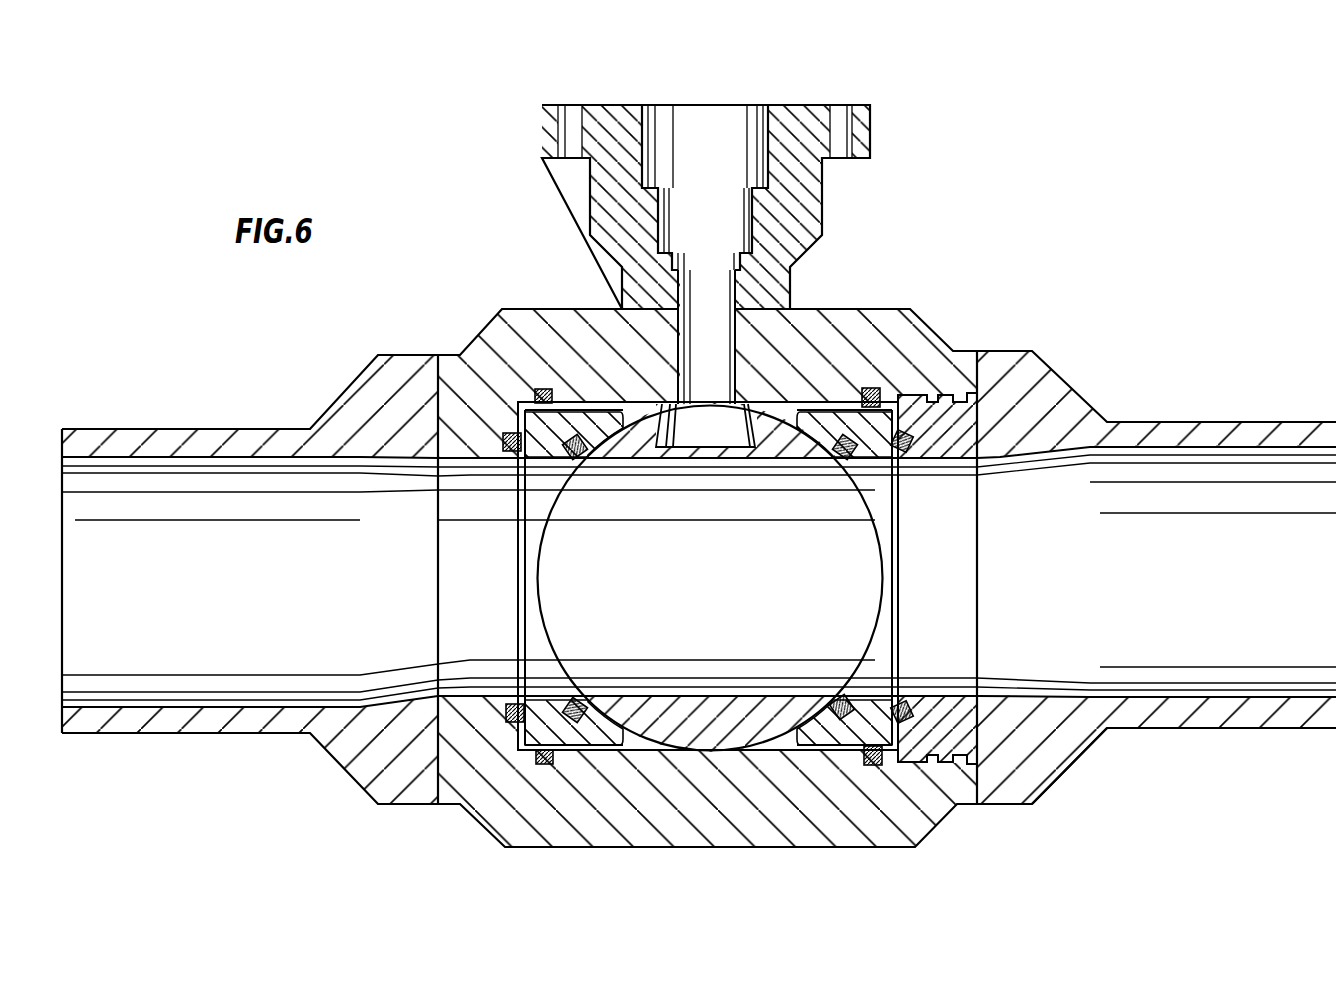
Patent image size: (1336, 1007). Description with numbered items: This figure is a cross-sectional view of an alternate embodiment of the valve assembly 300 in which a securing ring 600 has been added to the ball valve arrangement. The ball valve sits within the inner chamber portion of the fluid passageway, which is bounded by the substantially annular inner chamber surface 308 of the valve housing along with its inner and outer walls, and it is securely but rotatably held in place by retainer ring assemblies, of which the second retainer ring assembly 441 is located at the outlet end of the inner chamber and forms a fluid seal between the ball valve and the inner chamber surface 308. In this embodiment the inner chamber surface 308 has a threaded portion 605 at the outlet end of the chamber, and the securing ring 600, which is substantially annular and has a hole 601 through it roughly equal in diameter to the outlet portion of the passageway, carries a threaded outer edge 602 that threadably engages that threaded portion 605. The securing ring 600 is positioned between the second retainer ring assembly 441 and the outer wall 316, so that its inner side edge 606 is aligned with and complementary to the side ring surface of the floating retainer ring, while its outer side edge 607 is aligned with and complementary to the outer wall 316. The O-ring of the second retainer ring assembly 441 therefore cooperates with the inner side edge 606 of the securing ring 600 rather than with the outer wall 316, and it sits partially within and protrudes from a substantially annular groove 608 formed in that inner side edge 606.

The valve assembly 300 is at (952, 270).
The inner chamber surface 308 is at (607, 752).
The outer wall 316 is at (980, 737).
The second retainer ring assembly 441 is at (844, 747).
The securing ring 600 is at (972, 413).
The hole 601 is at (978, 628).
The threaded outer edge 602 is at (940, 757).
The threaded portion 605 is at (937, 395).
The inner side edge 606 is at (890, 400).
The outer side edge 607 is at (972, 420).
The annular groove 608 is at (906, 722).